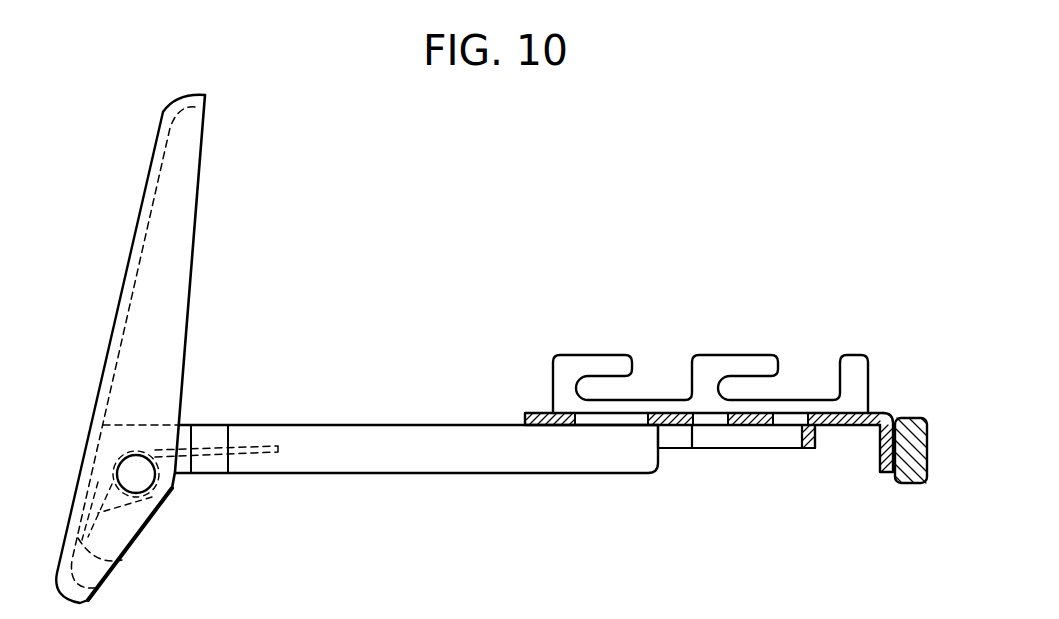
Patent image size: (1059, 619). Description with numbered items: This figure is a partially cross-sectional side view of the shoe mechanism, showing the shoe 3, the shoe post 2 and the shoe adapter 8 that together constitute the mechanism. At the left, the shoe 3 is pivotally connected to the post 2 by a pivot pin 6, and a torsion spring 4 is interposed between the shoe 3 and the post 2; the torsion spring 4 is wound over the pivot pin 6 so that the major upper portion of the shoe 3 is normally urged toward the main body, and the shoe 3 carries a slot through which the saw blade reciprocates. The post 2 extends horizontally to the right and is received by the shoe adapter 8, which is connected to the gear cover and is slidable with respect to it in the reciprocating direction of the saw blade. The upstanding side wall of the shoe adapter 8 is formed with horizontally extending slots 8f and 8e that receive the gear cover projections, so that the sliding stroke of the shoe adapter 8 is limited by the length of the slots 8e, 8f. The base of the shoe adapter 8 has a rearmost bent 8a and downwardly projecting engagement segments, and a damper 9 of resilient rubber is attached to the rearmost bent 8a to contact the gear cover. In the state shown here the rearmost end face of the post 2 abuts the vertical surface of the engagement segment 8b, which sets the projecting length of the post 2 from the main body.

The post 2 is at (349, 450).
The shoe 3 is at (185, 252).
The torsion spring 4 is at (122, 560).
The pivot pin 6 is at (143, 478).
The shoe adapter 8 is at (567, 365).
The rearmost bent 8a is at (880, 450).
The engagement segment 8b is at (812, 450).
The slot 8e is at (752, 390).
The slot 8f is at (605, 388).
The damper 9 is at (905, 428).